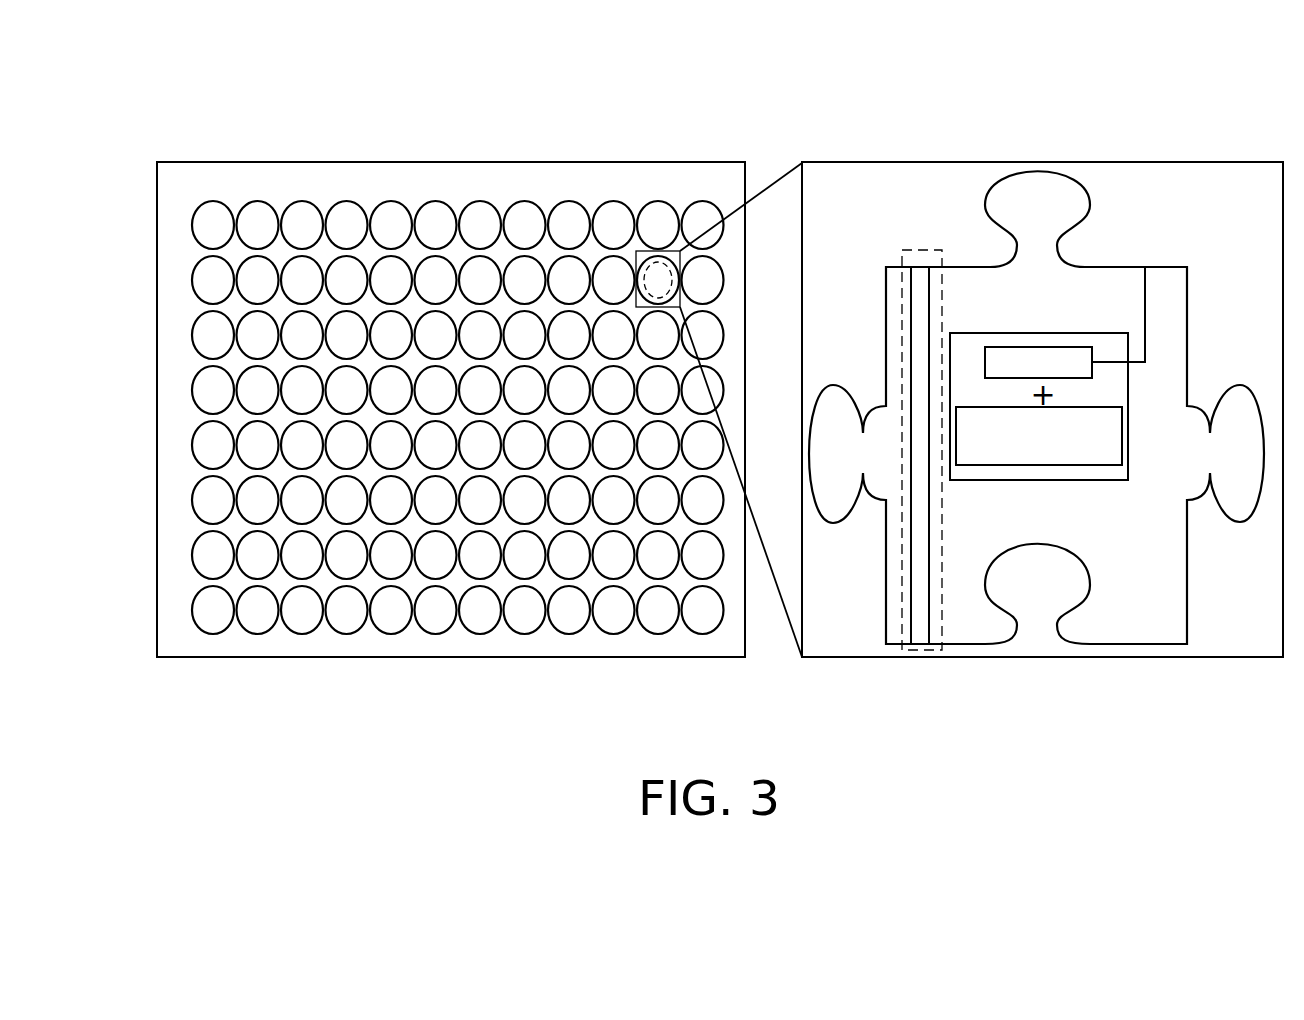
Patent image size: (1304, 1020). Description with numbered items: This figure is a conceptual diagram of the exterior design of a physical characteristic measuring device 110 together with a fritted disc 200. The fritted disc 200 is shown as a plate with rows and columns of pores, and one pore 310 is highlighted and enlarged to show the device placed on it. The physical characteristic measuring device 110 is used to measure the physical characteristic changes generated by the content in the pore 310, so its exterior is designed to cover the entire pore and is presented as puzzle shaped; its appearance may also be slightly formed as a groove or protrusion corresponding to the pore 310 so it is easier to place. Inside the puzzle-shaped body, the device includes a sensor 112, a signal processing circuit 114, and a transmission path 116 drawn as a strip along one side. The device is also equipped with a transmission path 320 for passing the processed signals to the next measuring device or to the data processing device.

The fritted disc 200 is at (427, 160).
The pore 310 is at (658, 265).
The physical characteristic measuring device 110 is at (1187, 570).
The transmission path 116 is at (912, 250).
The sensor 112 is at (1040, 347).
The signal processing circuit 114 is at (1060, 465).
The transmission path 320 is at (1147, 300).